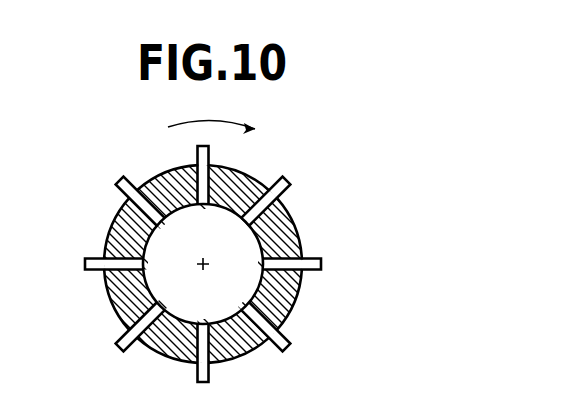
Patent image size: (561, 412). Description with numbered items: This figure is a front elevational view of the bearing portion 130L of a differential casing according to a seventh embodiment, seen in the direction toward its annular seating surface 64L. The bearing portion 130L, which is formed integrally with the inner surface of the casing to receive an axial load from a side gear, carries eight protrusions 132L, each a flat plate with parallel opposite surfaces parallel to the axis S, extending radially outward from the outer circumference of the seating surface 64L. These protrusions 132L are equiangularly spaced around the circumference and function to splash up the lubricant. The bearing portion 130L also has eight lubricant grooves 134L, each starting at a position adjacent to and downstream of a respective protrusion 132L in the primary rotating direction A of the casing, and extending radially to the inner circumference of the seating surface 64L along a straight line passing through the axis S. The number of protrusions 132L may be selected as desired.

The bearing portion 130L is at (318, 185).
The protrusion 132L is at (120, 183).
The lubricant groove 134L is at (150, 197).
The seating surface 64L is at (108, 230).
The axis S is at (197, 257).
The primary rotating direction A is at (211, 115).